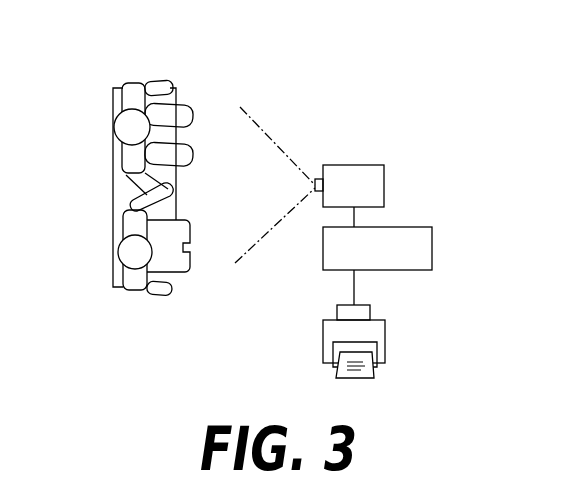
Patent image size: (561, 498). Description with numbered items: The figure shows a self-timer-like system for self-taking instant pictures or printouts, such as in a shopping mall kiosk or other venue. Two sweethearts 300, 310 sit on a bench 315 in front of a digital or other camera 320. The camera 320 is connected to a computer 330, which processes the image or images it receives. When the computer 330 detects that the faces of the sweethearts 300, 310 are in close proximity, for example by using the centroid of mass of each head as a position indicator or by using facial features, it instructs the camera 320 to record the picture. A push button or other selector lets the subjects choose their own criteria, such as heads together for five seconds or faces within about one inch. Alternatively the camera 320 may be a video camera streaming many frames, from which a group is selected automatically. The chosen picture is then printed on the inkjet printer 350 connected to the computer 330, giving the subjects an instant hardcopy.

The sweetheart 300 is at (131, 84).
The sweetheart 310 is at (178, 268).
The bench 315 is at (122, 190).
The camera 320 is at (384, 182).
The computer 330 is at (432, 245).
The inkjet printer 350 is at (385, 335).